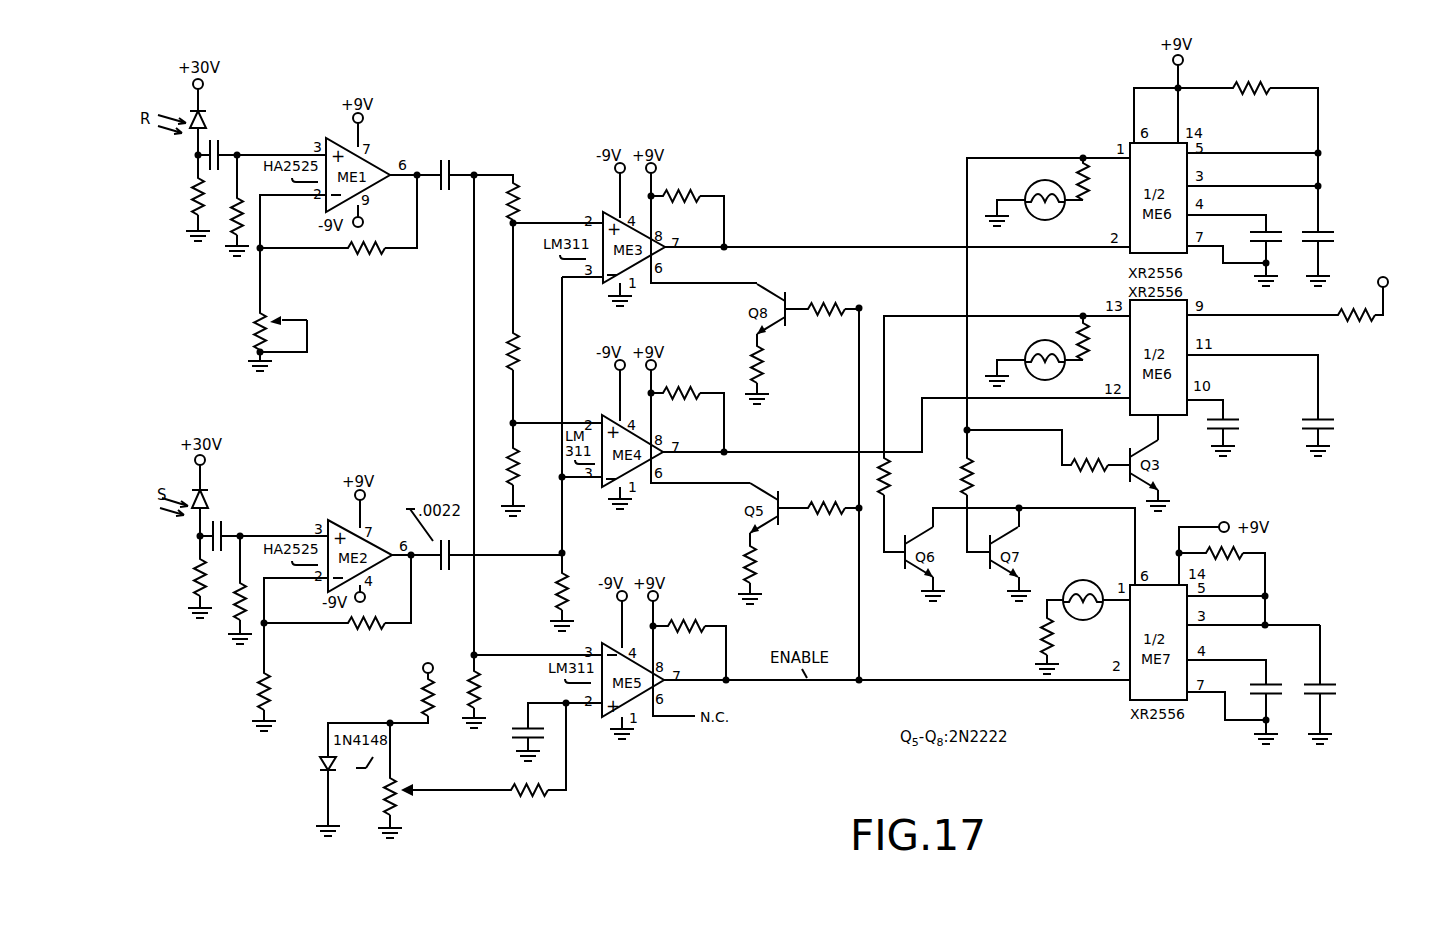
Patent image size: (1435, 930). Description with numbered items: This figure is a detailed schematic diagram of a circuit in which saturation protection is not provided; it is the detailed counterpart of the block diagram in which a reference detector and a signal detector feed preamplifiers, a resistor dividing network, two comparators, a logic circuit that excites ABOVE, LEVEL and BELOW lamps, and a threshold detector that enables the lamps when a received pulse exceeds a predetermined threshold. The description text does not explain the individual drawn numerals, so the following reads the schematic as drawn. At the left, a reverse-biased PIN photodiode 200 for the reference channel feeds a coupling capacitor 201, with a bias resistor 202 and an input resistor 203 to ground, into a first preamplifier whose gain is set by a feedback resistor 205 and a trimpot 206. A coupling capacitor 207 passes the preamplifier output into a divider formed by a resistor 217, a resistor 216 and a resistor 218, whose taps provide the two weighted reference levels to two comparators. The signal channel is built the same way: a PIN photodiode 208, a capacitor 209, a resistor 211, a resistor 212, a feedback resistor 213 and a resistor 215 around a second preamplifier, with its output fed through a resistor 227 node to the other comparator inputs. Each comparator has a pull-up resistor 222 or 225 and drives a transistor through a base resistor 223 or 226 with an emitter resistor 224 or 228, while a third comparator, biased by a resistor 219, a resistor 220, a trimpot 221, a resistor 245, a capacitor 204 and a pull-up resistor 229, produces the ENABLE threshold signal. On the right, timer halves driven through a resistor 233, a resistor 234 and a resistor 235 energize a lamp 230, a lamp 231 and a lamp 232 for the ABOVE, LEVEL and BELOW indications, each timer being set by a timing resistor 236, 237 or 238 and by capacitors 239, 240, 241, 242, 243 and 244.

The PIN photodiode (R detector) 200 is at (206, 108).
The 100 pF capacitor 201 is at (219, 140).
The 100K resistor 202 is at (192, 193).
The 1M resistor 203 is at (220, 250).
The 0.1 capacitor 204 is at (503, 743).
The 10K feedback resistor 205 is at (364, 243).
The 10K trimpot 206 is at (322, 333).
The .0022 capacitor 207 is at (447, 156).
The PIN photodiode (S detector) 208 is at (216, 478).
The 100 pF capacitor 209 is at (220, 513).
The 100K resistor 211 is at (188, 580).
The 1M resistor 212 is at (220, 627).
The 10K feedback resistor 213 is at (368, 617).
The 5.1K resistor 215 is at (257, 687).
The 2.2K resistor 216 is at (522, 330).
The 3.9K resistor 217 is at (526, 194).
The 3.9K resistor 218 is at (524, 469).
The 20K resistor 219 is at (487, 691).
The 10K resistor 220 is at (440, 698).
The 200 ohm trimpot 221 is at (408, 803).
The 10K resistor 222 is at (692, 187).
The 1K resistor 223 is at (830, 294).
The 1K resistor 224 is at (768, 364).
The 10K resistor 225 is at (686, 383).
The 1K resistor 226 is at (806, 498).
The 10K resistor 227 is at (575, 578).
The 1K resistor 228 is at (763, 554).
The 10K resistor 229 is at (679, 616).
The lamp L3 230 is at (1047, 223).
The lamp L2 231 is at (1040, 338).
The lamp L1 232 is at (1082, 578).
The 100 ohm resistor 233 is at (894, 481).
The 100 ohm resistor 234 is at (979, 474).
The 100 ohm resistor 235 is at (1076, 456).
The 2 MEG resistor 236 is at (1252, 77).
The 2 MEG resistor 237 is at (1365, 327).
The 2 MEG resistor 238 is at (1242, 547).
The .1 uF capacitor 239 is at (1330, 226).
The .01 capacitor 240 is at (1270, 225).
The .1 uF capacitor 241 is at (1327, 415).
The .01 uF capacitor 242 is at (1236, 415).
The .1 uF capacitor 243 is at (1331, 677).
The .01 uF capacitor 244 is at (1276, 679).
The resistor 245 is at (541, 803).